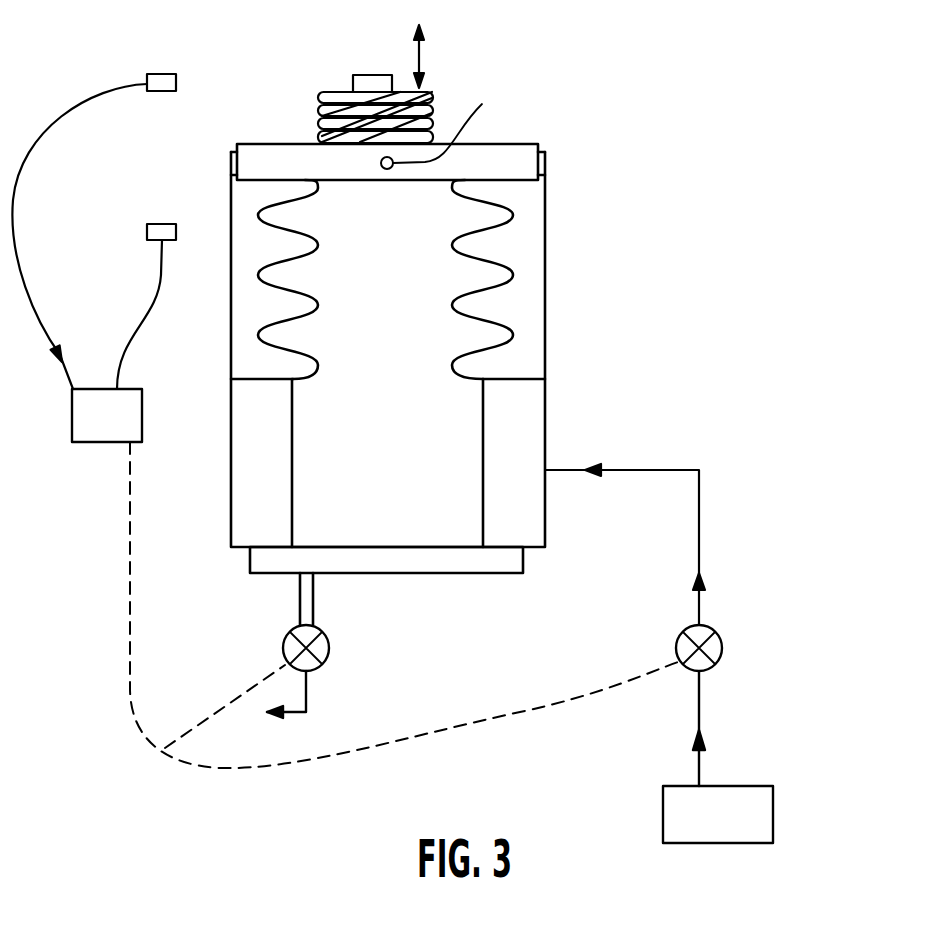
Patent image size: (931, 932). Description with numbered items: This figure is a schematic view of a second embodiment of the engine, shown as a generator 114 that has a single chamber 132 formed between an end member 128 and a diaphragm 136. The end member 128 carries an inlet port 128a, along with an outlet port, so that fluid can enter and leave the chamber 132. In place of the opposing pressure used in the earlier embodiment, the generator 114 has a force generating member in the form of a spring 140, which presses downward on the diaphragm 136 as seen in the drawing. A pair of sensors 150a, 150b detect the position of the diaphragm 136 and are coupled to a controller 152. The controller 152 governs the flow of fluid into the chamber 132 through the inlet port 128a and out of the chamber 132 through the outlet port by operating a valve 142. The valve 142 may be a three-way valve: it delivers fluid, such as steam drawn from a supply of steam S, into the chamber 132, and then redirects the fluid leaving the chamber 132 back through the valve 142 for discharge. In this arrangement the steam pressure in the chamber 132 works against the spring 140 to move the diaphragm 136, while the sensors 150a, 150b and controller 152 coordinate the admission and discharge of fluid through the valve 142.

The generator 114 is at (414, 324).
The end member 128 is at (247, 494).
The inlet port 128a is at (547, 470).
The chamber 132 is at (424, 330).
The diaphragm 136 is at (520, 157).
The spring 140 is at (433, 92).
The valve 142 is at (330, 656).
The sensor 150a is at (147, 82).
The sensor 150b is at (147, 232).
The controller 152 is at (105, 443).
The supply of steam S is at (713, 843).